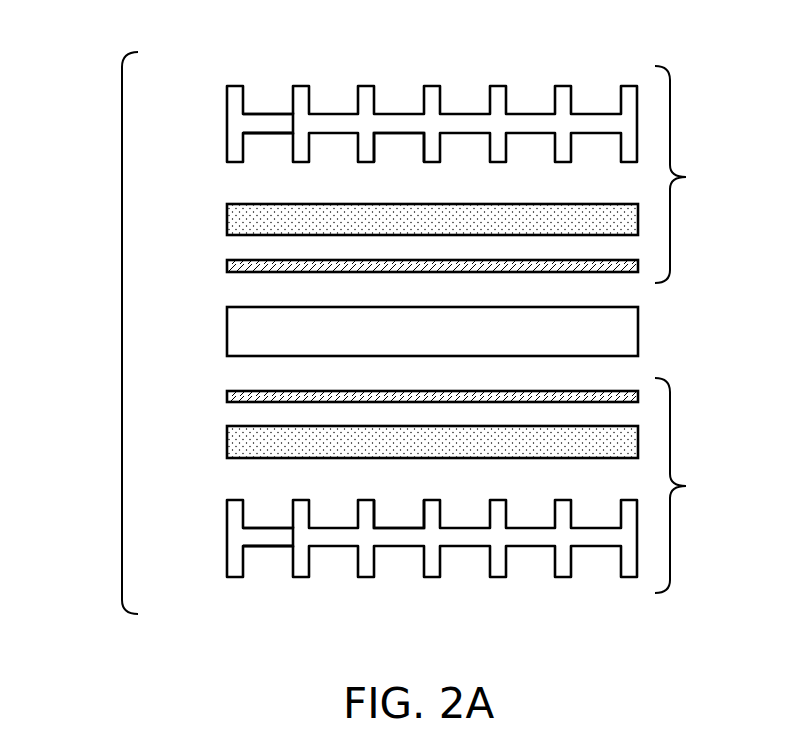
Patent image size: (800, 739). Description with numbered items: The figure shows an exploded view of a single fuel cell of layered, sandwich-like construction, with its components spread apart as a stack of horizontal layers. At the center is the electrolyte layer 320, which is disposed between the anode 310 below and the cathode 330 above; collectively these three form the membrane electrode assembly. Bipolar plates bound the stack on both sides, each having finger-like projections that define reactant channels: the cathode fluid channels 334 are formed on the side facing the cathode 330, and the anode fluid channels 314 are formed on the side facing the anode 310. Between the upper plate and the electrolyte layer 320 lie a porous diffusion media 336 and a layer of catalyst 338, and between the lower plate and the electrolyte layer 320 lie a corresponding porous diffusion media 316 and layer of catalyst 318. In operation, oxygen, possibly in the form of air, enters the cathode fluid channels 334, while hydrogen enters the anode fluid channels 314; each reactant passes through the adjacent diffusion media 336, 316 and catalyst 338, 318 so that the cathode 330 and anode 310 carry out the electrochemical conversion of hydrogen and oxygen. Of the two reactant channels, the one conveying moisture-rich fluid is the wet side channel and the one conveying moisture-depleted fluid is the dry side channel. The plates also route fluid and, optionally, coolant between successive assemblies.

The anode 310 is at (450, 513).
The anode fluid channel 314 is at (400, 514).
The porous diffusion media 316 is at (227, 444).
The layer of catalyst 318 is at (227, 396).
The electrolyte layer 320 is at (227, 332).
The cathode 330 is at (446, 147).
The cathode fluid channel 334 is at (400, 148).
The porous diffusion media 336 is at (227, 222).
The layer of catalyst 338 is at (227, 266).